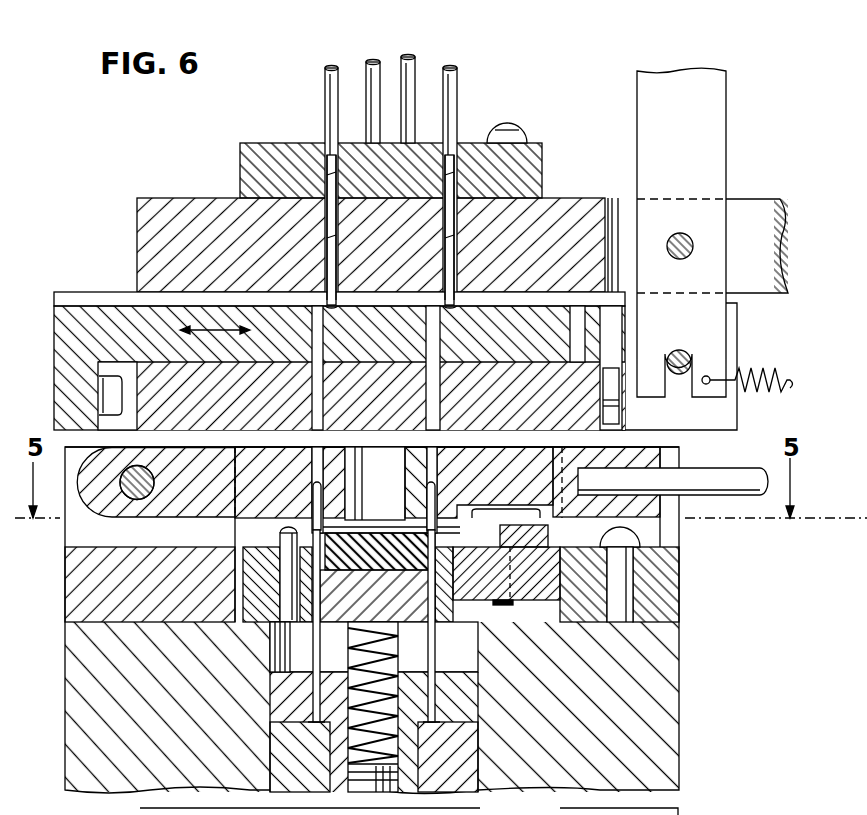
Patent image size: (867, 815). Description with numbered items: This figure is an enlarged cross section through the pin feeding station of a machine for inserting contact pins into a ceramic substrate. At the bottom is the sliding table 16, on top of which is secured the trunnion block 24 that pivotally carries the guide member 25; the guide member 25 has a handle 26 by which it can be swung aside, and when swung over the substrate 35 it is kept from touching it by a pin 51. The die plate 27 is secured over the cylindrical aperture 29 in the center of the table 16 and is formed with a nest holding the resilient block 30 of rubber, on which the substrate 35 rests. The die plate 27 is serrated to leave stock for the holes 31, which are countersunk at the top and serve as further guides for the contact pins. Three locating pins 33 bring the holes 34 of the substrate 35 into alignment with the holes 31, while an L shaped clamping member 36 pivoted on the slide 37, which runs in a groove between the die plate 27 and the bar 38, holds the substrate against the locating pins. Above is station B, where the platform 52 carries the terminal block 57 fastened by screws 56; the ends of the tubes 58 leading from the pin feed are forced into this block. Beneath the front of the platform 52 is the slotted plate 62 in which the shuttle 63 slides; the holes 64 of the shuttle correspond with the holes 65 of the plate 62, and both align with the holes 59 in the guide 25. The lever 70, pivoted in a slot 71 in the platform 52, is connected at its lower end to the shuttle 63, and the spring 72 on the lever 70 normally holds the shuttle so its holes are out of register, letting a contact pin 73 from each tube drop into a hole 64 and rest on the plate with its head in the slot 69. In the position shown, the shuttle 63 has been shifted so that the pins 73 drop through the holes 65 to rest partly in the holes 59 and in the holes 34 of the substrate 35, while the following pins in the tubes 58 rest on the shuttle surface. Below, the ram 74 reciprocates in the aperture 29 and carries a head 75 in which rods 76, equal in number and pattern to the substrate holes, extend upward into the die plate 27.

The table 16 is at (672, 680).
The trunnion block 24 is at (72, 576).
The guide member 25 is at (168, 510).
The handle 26 is at (722, 456).
The die plate 27 is at (264, 632).
The cylindrical aperture 29 is at (478, 640).
The resilient block 30 is at (386, 574).
The holes 31 is at (320, 576).
The pins 33 is at (286, 576).
The holes 34 is at (380, 551).
The substrate 35 is at (292, 528).
The clamping member 36 is at (546, 540).
The slide 37 is at (484, 584).
The bar 38 is at (676, 584).
The pin 51 is at (634, 538).
The platform 52 is at (584, 206).
The screws 56 is at (517, 126).
The terminal block 57 is at (263, 148).
The tubes 58 is at (450, 70).
The holes 59 is at (440, 474).
The slotted plate 62 is at (219, 399).
The shuttle 63 is at (321, 368).
The holes 64 is at (440, 340).
The holes 65 is at (440, 398).
The slot 69 is at (90, 296).
The lever 70 is at (718, 162).
The slot 71 is at (750, 210).
The spring 72 is at (744, 376).
The contact pin 73 is at (330, 288).
The ram 74 is at (466, 758).
The head 75 is at (463, 684).
The rods 76 is at (432, 662).